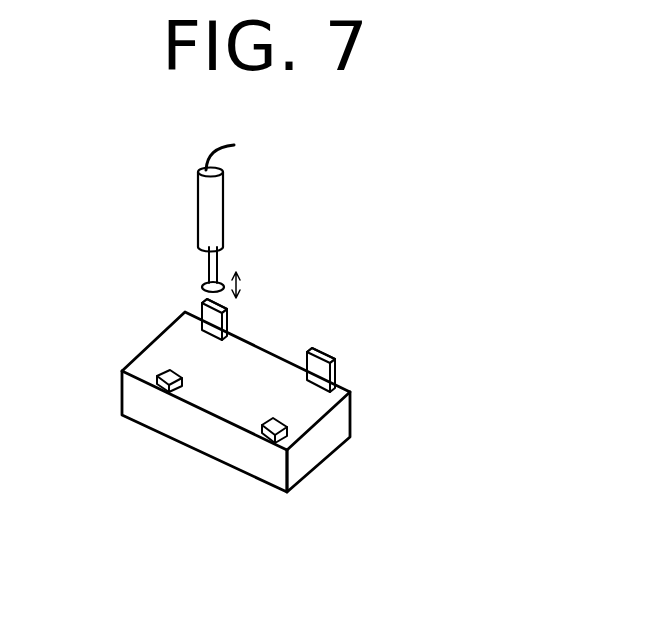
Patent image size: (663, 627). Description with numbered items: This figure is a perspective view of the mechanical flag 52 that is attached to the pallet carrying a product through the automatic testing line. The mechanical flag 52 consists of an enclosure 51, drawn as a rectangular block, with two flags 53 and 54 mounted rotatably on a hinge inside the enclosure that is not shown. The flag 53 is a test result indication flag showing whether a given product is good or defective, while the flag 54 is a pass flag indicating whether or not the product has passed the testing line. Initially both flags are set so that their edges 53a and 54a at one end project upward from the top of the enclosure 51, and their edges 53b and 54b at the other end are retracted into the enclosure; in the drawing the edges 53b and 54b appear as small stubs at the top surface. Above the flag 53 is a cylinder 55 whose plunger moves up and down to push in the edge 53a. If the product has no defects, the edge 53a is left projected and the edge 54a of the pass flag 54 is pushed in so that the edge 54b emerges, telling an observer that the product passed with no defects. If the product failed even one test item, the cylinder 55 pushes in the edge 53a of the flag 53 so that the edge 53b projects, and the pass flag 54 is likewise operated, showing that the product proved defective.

The enclosure 51 is at (180, 425).
The mechanical flag 52 is at (337, 454).
The test result indication flag 53 is at (215, 328).
The edge of flag 53 53a is at (238, 303).
The edge of flag 53 53b is at (160, 372).
The pass flag 54 is at (323, 377).
The edge of pass flag 54 54a is at (323, 353).
The edge of pass flag 54 54b is at (257, 430).
The cylinder 55 is at (217, 202).